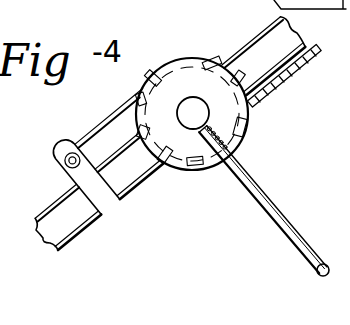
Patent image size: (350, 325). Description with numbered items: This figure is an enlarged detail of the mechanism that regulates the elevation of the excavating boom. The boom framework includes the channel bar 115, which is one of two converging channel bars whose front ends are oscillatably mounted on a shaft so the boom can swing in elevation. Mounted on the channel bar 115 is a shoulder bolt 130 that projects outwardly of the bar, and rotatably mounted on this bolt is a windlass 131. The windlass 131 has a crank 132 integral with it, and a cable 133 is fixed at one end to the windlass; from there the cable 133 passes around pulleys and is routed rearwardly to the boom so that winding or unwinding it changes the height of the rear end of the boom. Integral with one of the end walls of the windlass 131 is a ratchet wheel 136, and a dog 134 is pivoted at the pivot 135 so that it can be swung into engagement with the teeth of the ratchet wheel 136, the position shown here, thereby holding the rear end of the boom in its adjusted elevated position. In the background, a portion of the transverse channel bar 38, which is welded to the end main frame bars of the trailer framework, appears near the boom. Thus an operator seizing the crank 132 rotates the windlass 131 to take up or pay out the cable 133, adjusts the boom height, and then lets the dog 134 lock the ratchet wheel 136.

The transverse channel bar 38 is at (311, 2).
The channel bar 115 is at (138, 177).
The shoulder bolt 130 is at (192, 99).
The windlass 131 is at (243, 125).
The crank 132 is at (268, 200).
The cable 133 is at (298, 76).
The dog 134 is at (120, 107).
The pivot 135 is at (70, 153).
The ratchet wheel 136 is at (196, 60).